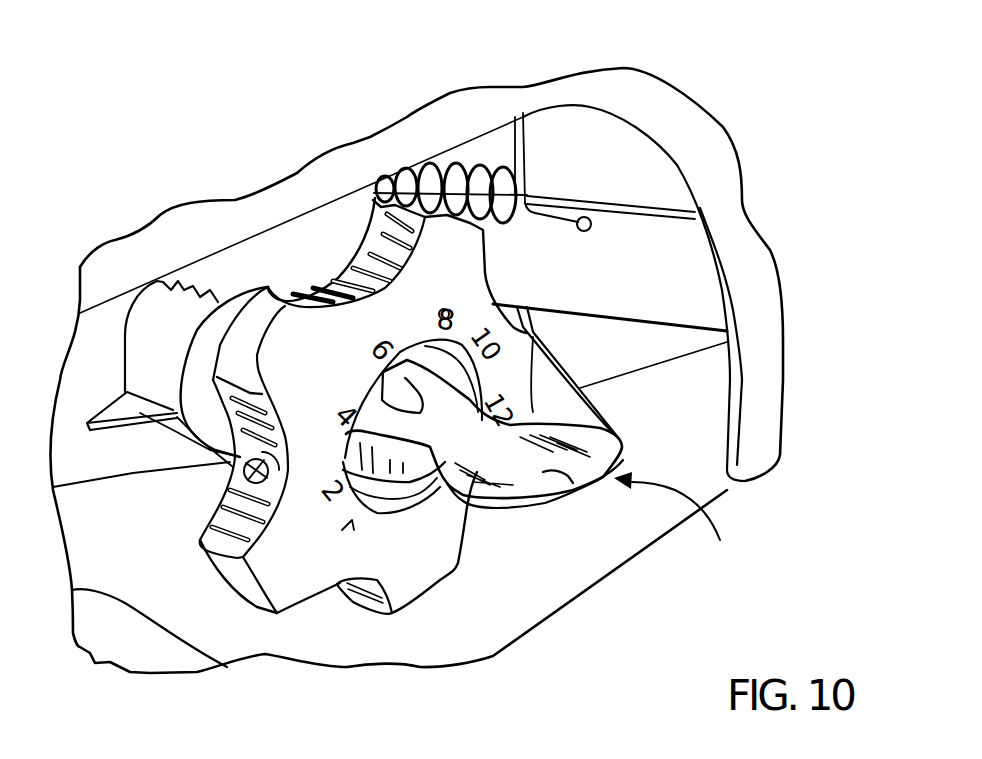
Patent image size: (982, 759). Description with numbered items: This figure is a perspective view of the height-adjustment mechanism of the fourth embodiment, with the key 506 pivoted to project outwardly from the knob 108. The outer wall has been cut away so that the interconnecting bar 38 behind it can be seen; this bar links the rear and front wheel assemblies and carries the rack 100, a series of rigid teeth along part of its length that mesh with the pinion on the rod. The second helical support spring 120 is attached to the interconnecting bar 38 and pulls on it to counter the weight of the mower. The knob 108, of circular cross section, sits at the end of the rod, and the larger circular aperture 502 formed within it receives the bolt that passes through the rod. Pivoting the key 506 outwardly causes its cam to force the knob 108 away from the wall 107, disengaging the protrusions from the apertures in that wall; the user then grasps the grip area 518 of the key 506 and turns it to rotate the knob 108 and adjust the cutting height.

The rack 100 is at (220, 302).
The wall 107 is at (263, 213).
The second helical support spring 120 is at (460, 160).
The interconnecting bar 38 is at (662, 267).
The knob 108 is at (423, 567).
The larger circular aperture 502 is at (429, 357).
The key 506 is at (688, 527).
The grip area 518 is at (573, 483).